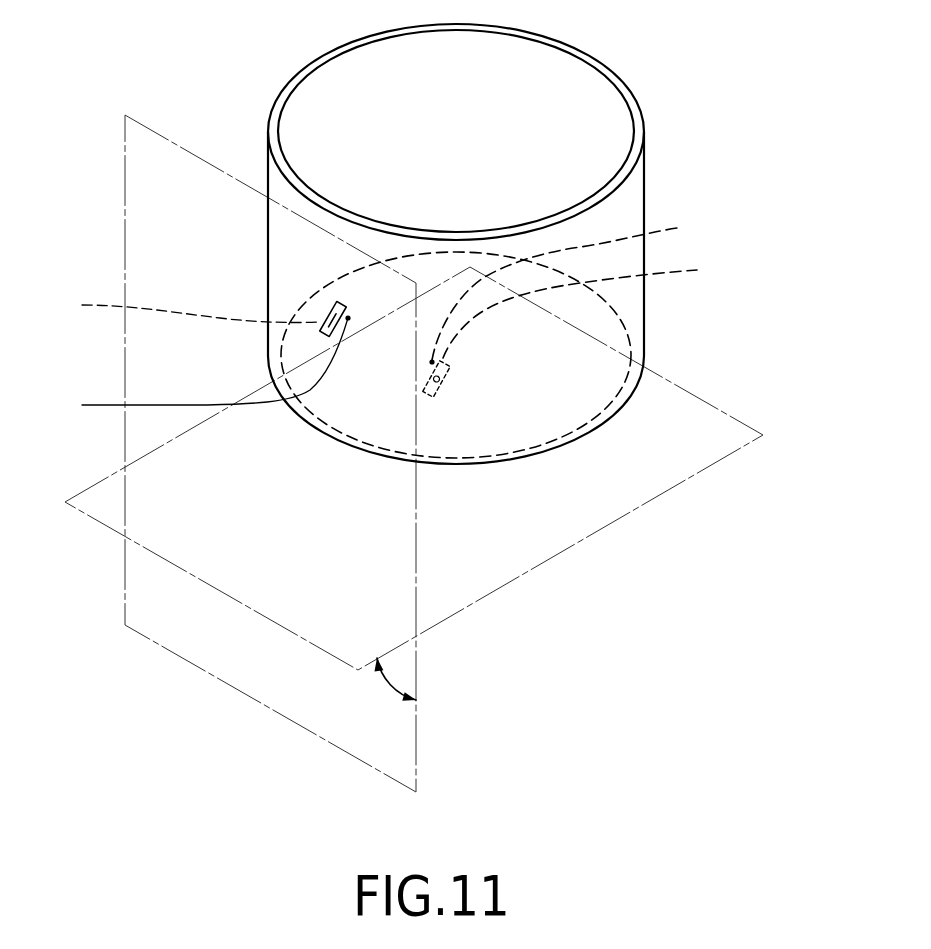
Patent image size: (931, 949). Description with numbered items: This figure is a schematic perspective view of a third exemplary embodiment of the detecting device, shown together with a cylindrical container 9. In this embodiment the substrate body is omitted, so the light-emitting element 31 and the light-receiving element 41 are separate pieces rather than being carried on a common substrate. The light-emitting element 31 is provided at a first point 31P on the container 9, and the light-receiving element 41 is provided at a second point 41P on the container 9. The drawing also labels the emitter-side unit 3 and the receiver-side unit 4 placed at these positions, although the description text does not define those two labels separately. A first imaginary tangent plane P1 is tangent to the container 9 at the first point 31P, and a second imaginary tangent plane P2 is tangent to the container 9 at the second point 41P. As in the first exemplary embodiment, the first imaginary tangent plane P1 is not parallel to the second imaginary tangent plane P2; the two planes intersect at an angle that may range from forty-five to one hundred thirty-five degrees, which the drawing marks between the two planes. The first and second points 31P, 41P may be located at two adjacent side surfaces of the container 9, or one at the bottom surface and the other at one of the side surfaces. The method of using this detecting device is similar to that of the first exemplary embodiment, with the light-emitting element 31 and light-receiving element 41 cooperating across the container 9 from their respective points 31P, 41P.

The container 9 is at (657, 181).
The first sensor 3 is at (310, 342).
The light-emitting element 31 is at (185, 306).
The first point 31P is at (189, 369).
The second sensor 4 is at (458, 383).
The light-receiving element 41 is at (586, 305).
The second point 41P is at (580, 286).
The first imaginary tangent plane P1 is at (193, 138).
The second imaginary tangent plane P2 is at (590, 560).